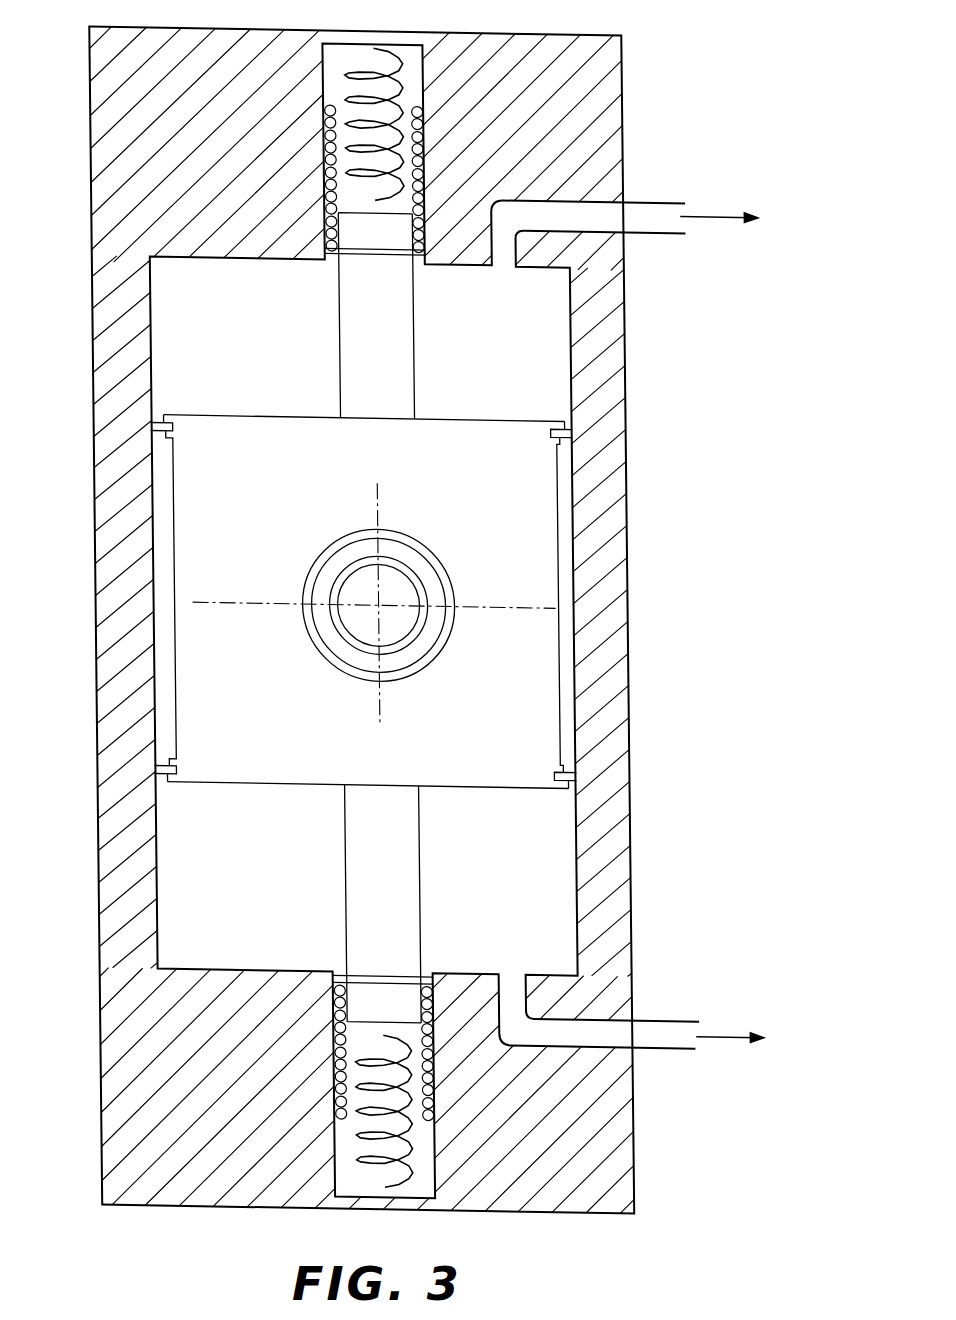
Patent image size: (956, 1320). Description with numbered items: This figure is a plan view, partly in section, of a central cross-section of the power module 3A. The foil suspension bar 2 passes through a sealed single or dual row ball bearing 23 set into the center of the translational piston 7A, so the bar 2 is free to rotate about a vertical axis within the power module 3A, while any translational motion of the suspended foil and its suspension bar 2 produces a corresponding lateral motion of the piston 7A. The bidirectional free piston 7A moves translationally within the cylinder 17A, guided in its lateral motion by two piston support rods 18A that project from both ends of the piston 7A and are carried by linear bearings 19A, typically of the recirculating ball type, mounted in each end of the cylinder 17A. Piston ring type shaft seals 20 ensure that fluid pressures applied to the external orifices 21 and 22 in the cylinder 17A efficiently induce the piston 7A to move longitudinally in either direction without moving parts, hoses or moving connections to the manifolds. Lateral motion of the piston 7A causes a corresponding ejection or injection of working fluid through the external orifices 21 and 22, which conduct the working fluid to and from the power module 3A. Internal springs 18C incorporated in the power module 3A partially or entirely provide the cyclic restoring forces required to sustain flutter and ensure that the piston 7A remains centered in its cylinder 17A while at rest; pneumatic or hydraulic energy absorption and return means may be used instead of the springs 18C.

The power module 3A is at (645, 22).
The cylinder 17A is at (619, 902).
The translational piston 7A is at (418, 602).
The piston support rods 18A is at (411, 358).
The internal springs 18C is at (399, 92).
The linear bearings 19A is at (326, 1095).
The piston ring type shaft seals 20 is at (322, 983).
The external orifice 21 is at (650, 203).
The external orifice 22 is at (657, 1026).
The foil suspension bar 2 is at (400, 579).
The sealed ball bearing 23 is at (334, 648).